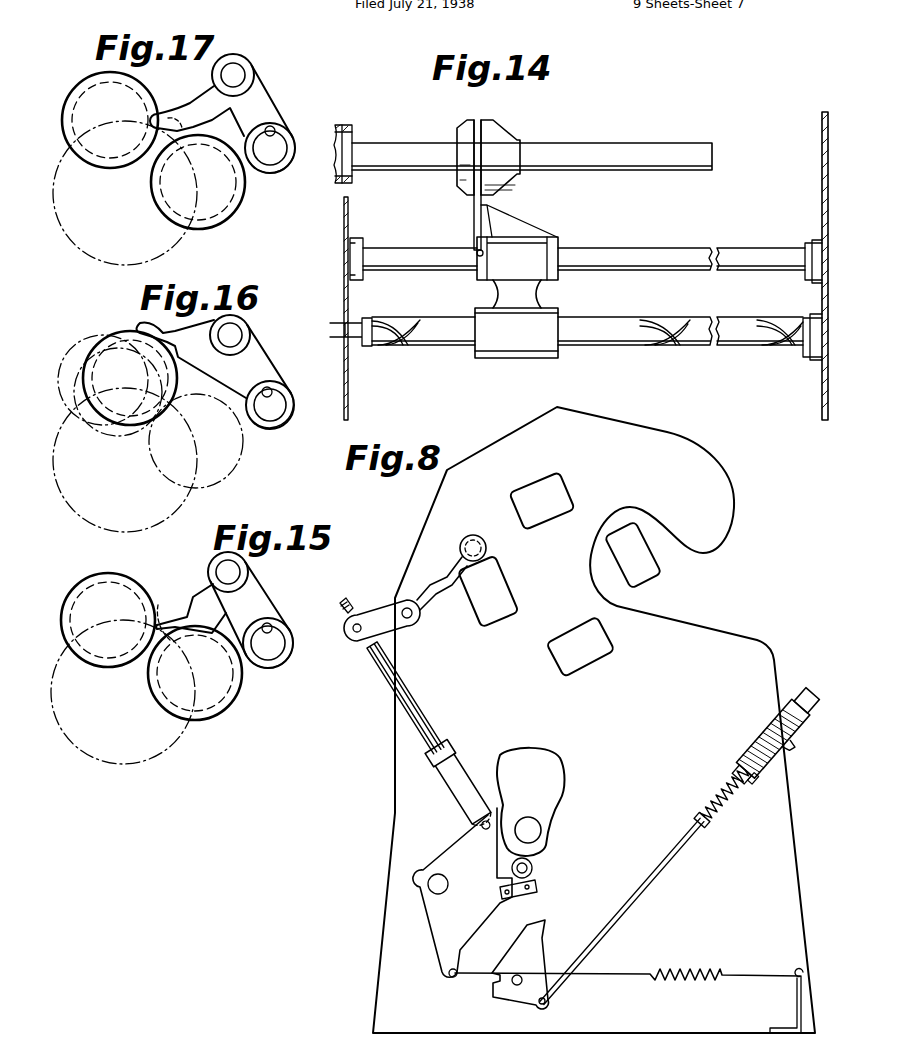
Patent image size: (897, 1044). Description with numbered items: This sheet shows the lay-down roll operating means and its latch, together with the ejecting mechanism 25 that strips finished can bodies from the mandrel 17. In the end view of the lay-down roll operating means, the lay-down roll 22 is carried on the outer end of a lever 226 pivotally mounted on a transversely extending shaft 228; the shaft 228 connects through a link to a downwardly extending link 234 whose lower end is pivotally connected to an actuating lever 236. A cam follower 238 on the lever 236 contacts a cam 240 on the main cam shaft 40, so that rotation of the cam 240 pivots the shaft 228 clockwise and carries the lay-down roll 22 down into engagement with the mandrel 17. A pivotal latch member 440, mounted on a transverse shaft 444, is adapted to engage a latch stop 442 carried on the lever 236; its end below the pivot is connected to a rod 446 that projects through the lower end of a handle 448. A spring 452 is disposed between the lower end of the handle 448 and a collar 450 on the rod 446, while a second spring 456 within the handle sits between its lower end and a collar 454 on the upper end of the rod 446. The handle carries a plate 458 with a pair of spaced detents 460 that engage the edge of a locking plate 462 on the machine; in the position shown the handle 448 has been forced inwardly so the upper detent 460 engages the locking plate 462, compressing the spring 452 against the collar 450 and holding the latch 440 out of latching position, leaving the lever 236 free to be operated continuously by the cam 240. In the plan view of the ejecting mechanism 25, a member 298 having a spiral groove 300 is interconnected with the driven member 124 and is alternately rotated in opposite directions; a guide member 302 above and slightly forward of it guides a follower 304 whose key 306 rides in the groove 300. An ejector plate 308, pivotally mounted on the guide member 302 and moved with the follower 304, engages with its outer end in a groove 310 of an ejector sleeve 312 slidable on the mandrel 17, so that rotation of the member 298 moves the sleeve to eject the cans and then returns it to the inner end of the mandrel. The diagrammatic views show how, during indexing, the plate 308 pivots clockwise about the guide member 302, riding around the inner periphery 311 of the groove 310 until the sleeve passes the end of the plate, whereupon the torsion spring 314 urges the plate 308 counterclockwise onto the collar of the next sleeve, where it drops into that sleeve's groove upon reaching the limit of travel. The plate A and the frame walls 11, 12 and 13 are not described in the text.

In FIG. 8, the frame plate A is at (741, 489).
In FIG. 14, the frame side wall 11 is at (348, 228).
In FIG. 14, the bearing bracket 12 is at (343, 125).
In FIG. 14, the frame side plate 13 is at (822, 184).
In FIG. 14, the mandrel 17 is at (633, 171).
In FIG. 8, the mandrel 17 is at (532, 538).
In FIG. 8, the lay-down roll 22 is at (475, 535).
In FIG. 17, the ejecting mechanism 25 is at (279, 91).
In FIG. 14, the ejecting mechanism 25 is at (551, 300).
In FIG. 16, the ejecting mechanism 25 is at (276, 349).
In FIG. 15, the ejecting mechanism 25 is at (279, 596).
In FIG. 8, the main cam shaft 40 is at (543, 830).
In FIG. 14, the driven member 124 is at (354, 327).
In FIG. 8, the lever 226 is at (428, 587).
In FIG. 8, the shaft 228 is at (403, 600).
In FIG. 8, the link 234 is at (432, 715).
In FIG. 8, the actuating lever 236 is at (452, 851).
In FIG. 8, the cam follower 238 is at (533, 867).
In FIG. 8, the cam 240 is at (558, 777).
In FIG. 17, the member 298 is at (272, 157).
In FIG. 14, the member 298 is at (602, 350).
In FIG. 16, the member 298 is at (283, 405).
In FIG. 15, the member 298 is at (280, 653).
In FIG. 17, the spiral groove 300 is at (276, 137).
In FIG. 14, the spiral groove 300 is at (667, 347).
In FIG. 16, the spiral groove 300 is at (280, 388).
In FIG. 15, the spiral groove 300 is at (274, 628).
In FIG. 17, the guide member 302 is at (237, 70).
In FIG. 14, the guide member 302 is at (428, 262).
In FIG. 16, the guide member 302 is at (235, 331).
In FIG. 15, the guide member 302 is at (237, 570).
In FIG. 17, the follower 304 is at (293, 167).
In FIG. 14, the follower 304 is at (533, 344).
In FIG. 16, the follower 304 is at (285, 424).
In FIG. 15, the follower 304 is at (277, 668).
In FIG. 17, the key 306 is at (273, 129).
In FIG. 16, the key 306 is at (270, 388).
In FIG. 15, the key 306 is at (269, 626).
In FIG. 17, the ejector plate 308 is at (197, 98).
In FIG. 14, the ejector plate 308 is at (473, 205).
In FIG. 16, the ejector plate 308 is at (178, 333).
In FIG. 15, the ejector plate 308 is at (203, 598).
In FIG. 17, the groove 310 is at (187, 110).
In FIG. 14, the groove 310 is at (482, 120).
In FIG. 16, the groove 310 is at (117, 336).
In FIG. 15, the groove 310 is at (127, 581).
In FIG. 17, the inner periphery 311 is at (141, 193).
In FIG. 16, the inner periphery 311 is at (130, 378).
In FIG. 15, the inner periphery 311 is at (139, 692).
In FIG. 17, the ejector sleeve 312 is at (80, 86).
In FIG. 14, the ejector sleeve 312 is at (506, 137).
In FIG. 16, the ejector sleeve 312 is at (95, 348).
In FIG. 15, the ejector sleeve 312 is at (98, 578).
In FIG. 14, the torsion spring 314 is at (472, 232).
In FIG. 8, the latch member 440 is at (544, 928).
In FIG. 8, the latch stop 442 is at (538, 886).
In FIG. 8, the transverse shaft 444 is at (517, 985).
In FIG. 8, the rod 446 is at (643, 890).
In FIG. 8, the handle 448 is at (807, 690).
In FIG. 8, the collar 450 is at (703, 828).
In FIG. 8, the spring 452 is at (716, 800).
In FIG. 8, the collar 454 is at (787, 740).
In FIG. 8, the second spring 456 is at (757, 740).
In FIG. 8, the plate 458 is at (773, 772).
In FIG. 8, the detents 460 is at (763, 782).
In FIG. 8, the locking plate 462 is at (784, 758).